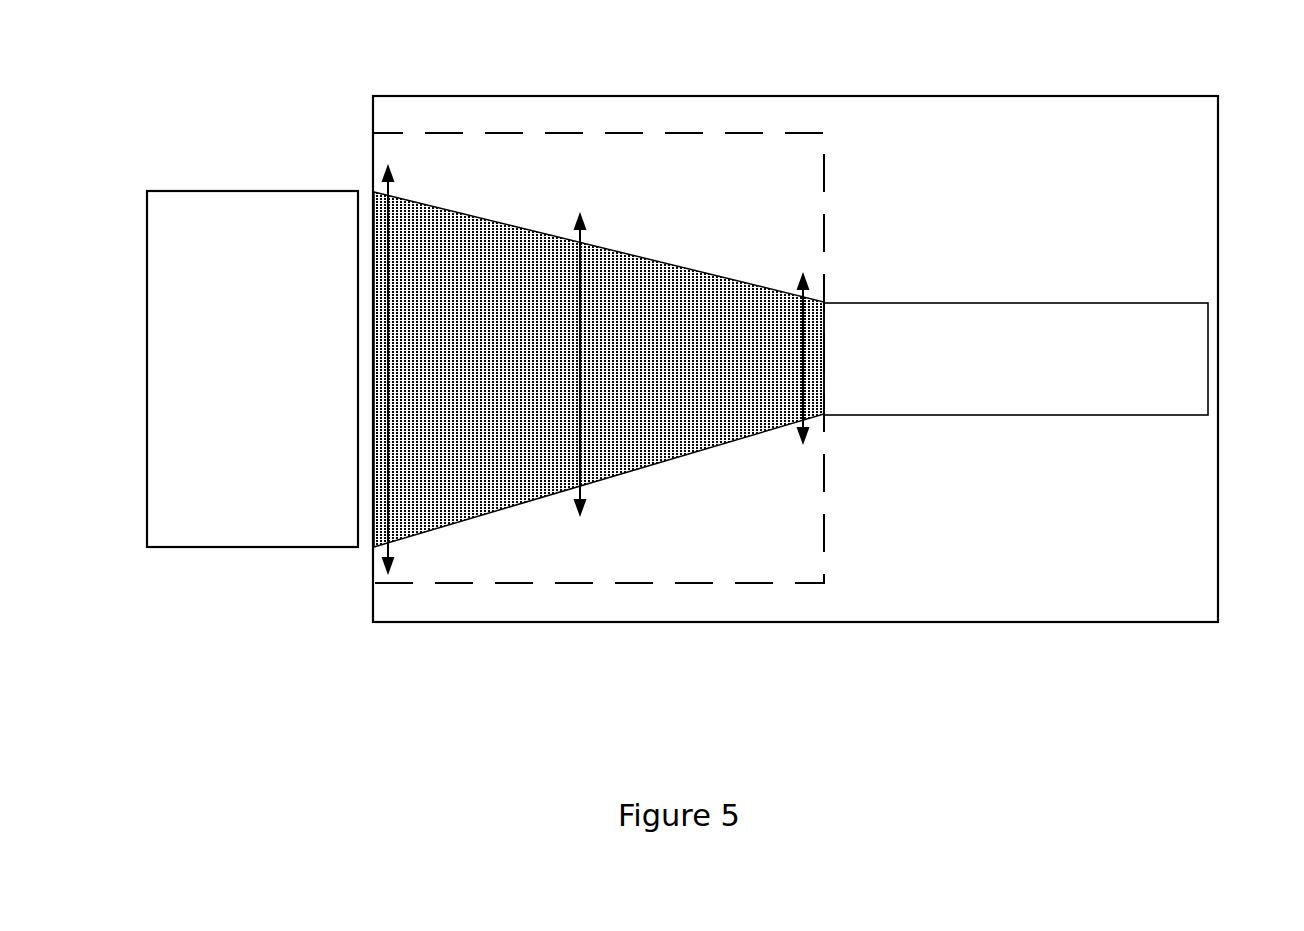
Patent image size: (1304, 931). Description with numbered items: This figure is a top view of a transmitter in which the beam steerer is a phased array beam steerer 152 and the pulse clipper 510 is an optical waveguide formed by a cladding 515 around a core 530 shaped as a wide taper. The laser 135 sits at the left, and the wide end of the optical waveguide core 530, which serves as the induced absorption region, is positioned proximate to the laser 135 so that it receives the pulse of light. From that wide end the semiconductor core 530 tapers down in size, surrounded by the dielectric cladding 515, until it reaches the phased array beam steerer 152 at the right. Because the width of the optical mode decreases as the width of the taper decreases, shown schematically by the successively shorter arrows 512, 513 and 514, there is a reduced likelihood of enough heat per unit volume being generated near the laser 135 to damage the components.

The laser 135 is at (177, 509).
The phased array beam steerer 152 is at (1188, 360).
The pulse clipper 510 is at (621, 133).
The optical mode width 512 is at (390, 470).
The optical mode width 513 is at (578, 435).
The optical mode width 514 is at (803, 366).
The cladding 515 is at (685, 180).
The optical waveguide core 530 is at (655, 415).